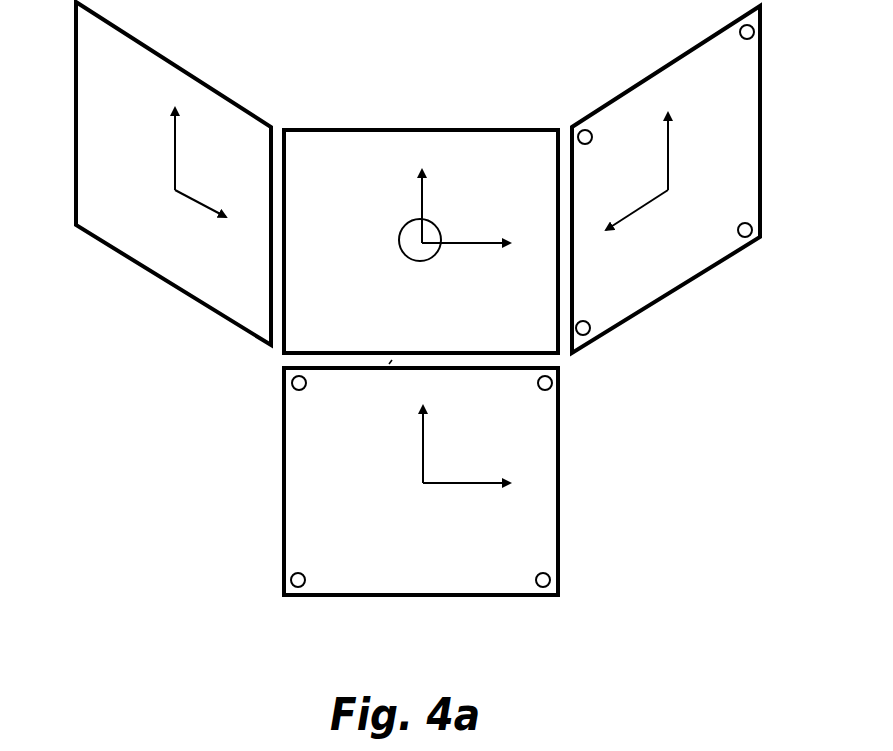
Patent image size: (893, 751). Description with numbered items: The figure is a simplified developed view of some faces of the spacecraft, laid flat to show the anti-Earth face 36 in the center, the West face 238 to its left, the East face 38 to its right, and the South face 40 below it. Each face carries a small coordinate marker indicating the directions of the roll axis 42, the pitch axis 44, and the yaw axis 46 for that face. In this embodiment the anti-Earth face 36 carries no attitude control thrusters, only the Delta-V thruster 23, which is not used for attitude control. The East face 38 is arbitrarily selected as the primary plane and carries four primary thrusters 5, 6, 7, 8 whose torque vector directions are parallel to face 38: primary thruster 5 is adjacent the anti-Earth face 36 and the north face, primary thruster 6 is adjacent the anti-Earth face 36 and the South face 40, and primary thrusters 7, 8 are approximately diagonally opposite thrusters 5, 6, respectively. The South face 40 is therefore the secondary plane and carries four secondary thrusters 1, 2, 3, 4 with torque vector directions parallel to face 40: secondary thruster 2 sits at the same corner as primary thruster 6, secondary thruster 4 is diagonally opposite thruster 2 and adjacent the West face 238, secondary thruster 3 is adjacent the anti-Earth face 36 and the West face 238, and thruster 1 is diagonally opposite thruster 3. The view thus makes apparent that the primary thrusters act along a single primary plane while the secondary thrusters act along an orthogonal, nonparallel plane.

The secondary thruster 1 is at (536, 575).
The secondary thruster 2 is at (538, 387).
The secondary thruster 3 is at (305, 388).
The secondary thruster 4 is at (304, 575).
The primary thruster 5 is at (591, 141).
The primary thruster 6 is at (589, 322).
The primary thruster 7 is at (738, 231).
The primary thruster 8 is at (741, 38).
The Delta-V thruster 23 is at (425, 261).
The anti-Earth face 36 is at (461, 130).
The East face 38 is at (677, 287).
The South face 40 is at (430, 595).
The roll axis 42 is at (482, 247).
The pitch axis 44 is at (176, 152).
The yaw axis 46 is at (192, 200).
The West face 238 is at (167, 277).